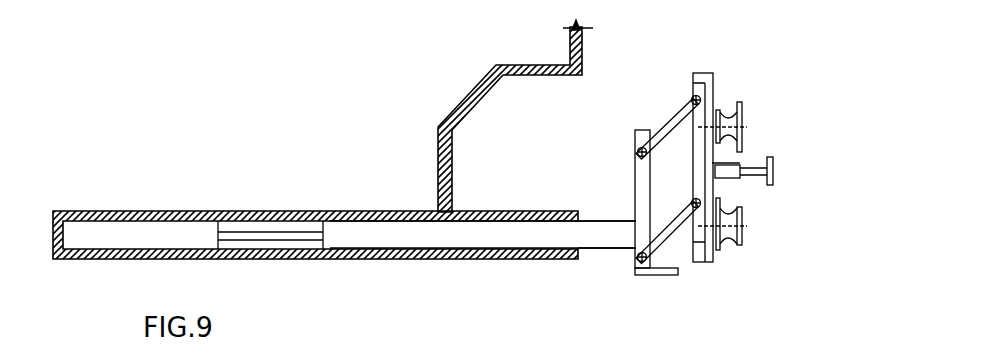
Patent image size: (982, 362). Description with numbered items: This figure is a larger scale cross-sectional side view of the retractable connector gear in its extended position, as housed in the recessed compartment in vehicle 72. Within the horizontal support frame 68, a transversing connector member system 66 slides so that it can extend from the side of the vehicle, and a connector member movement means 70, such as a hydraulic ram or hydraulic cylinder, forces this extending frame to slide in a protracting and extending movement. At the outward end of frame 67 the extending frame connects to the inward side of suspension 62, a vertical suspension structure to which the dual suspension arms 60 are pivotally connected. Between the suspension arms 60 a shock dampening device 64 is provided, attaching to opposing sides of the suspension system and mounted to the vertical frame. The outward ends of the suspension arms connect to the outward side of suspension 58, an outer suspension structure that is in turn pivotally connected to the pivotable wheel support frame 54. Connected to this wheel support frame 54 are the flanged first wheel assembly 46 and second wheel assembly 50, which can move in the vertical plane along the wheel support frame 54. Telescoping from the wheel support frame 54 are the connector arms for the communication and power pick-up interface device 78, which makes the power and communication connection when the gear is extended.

The first wheel assembly 46 is at (755, 115).
The second wheel assembly 50 is at (753, 218).
The pivotable wheel support frame 54 is at (710, 60).
The outward side of suspension 58 is at (680, 88).
The suspension arms 60 is at (662, 125).
The inward side of suspension 62 is at (635, 180).
The shock dampening device 64 is at (696, 183).
The transversing connector member system 66 is at (483, 237).
The outward end of frame 67 is at (630, 248).
The horizontal support frame 68 is at (511, 263).
The connector member movement means 70 is at (296, 232).
The recessed compartment in vehicle 72 is at (515, 116).
The communication and power pick-up interface device 78 is at (787, 170).